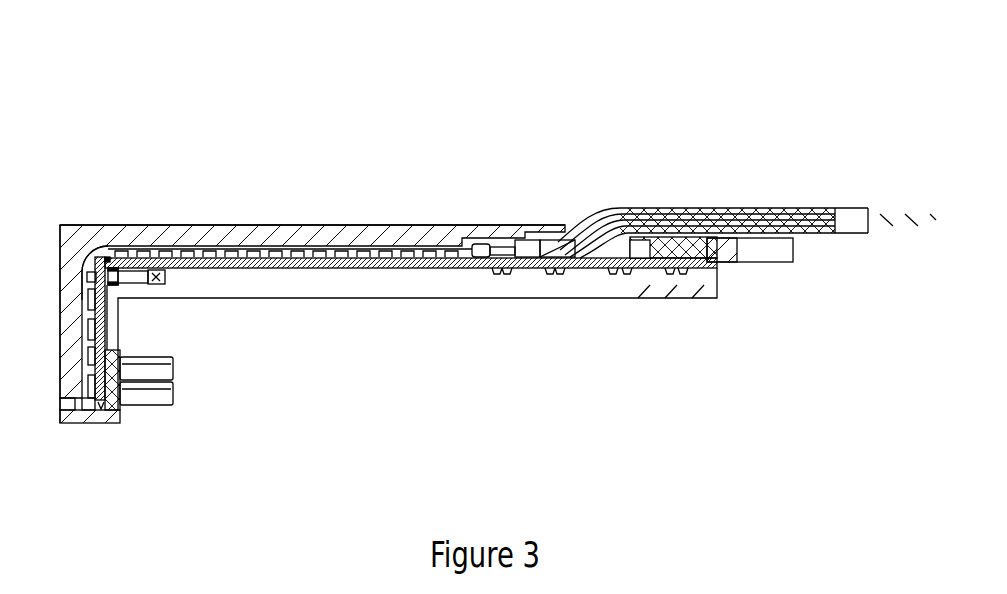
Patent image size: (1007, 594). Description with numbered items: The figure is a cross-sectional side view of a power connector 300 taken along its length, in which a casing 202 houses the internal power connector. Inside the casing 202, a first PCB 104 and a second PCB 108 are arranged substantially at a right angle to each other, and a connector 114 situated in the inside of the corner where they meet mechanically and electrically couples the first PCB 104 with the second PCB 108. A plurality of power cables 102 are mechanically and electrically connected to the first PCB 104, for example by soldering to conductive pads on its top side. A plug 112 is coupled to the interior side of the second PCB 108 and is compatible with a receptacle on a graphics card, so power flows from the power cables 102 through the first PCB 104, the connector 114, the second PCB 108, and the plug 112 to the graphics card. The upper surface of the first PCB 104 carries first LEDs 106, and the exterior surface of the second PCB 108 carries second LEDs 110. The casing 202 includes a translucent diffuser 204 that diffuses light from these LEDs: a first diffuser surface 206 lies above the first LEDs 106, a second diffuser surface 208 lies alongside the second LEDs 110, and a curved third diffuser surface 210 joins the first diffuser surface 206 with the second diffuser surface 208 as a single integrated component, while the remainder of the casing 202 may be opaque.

The power connector 300 is at (367, 44).
The power cables 102 is at (592, 233).
The first printed circuit board 104 is at (467, 268).
The first light-emitting diodes 106 is at (305, 239).
The second printed circuit board 108 is at (103, 333).
The second light-emitting diodes 110 is at (92, 298).
The plug 112 is at (173, 388).
The connector 114 is at (150, 283).
The casing 202 is at (358, 283).
The diffuser 204 is at (118, 233).
The first diffuser surface 206 is at (388, 239).
The second diffuser surface 208 is at (70, 382).
The third diffuser surface 210 is at (76, 236).